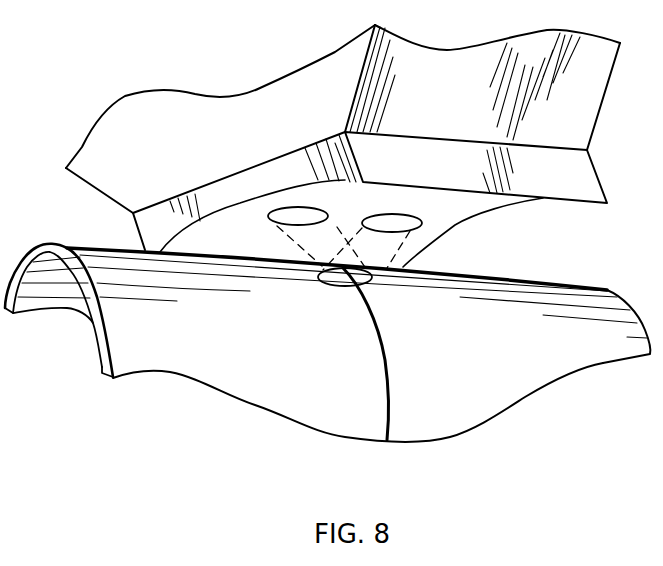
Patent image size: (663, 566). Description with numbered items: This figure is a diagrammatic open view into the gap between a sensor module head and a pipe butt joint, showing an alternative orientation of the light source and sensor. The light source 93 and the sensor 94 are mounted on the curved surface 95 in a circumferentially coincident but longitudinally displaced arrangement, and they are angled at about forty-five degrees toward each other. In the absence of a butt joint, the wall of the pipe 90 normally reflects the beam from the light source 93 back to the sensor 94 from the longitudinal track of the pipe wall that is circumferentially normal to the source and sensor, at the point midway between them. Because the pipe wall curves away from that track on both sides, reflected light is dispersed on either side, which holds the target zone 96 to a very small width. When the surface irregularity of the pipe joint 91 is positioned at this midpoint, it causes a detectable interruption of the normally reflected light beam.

The pipe 90 is at (229, 367).
The pipe joint 91 is at (383, 347).
The light source 93 is at (268, 215).
The sensor 94 is at (422, 223).
The curved surface 95 is at (197, 241).
The target zone 96 is at (323, 285).